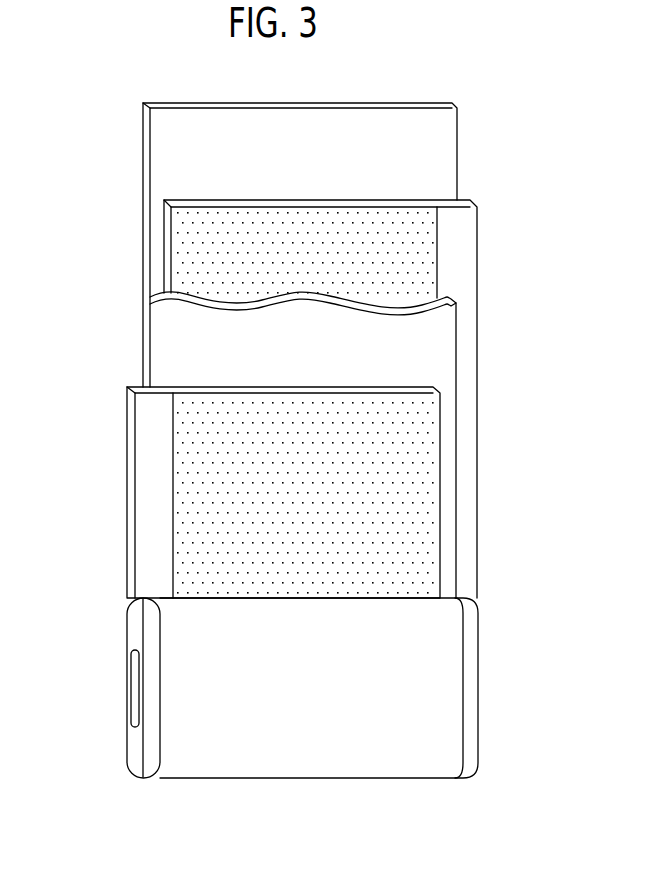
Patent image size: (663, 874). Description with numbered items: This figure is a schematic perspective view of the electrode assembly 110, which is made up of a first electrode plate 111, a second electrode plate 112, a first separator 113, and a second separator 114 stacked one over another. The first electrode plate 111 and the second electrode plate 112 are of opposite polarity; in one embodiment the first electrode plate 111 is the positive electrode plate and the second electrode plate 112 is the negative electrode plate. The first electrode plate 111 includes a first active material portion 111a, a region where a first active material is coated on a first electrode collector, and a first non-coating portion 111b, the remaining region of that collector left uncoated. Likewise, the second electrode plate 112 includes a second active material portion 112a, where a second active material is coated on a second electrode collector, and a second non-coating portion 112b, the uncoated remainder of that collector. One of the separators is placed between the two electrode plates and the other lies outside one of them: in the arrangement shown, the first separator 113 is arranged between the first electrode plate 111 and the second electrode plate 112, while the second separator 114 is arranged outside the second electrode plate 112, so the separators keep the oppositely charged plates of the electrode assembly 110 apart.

The electrode assembly 110 is at (302, 752).
The first electrode plate 111 is at (124, 447).
The first active material portion 111a is at (430, 487).
The first non-coating portion 111b is at (145, 540).
The second electrode plate 112 is at (161, 267).
The second active material portion 112a is at (170, 237).
The second non-coating portion 112b is at (458, 260).
The first separator 113 is at (140, 352).
The second separator 114 is at (140, 163).